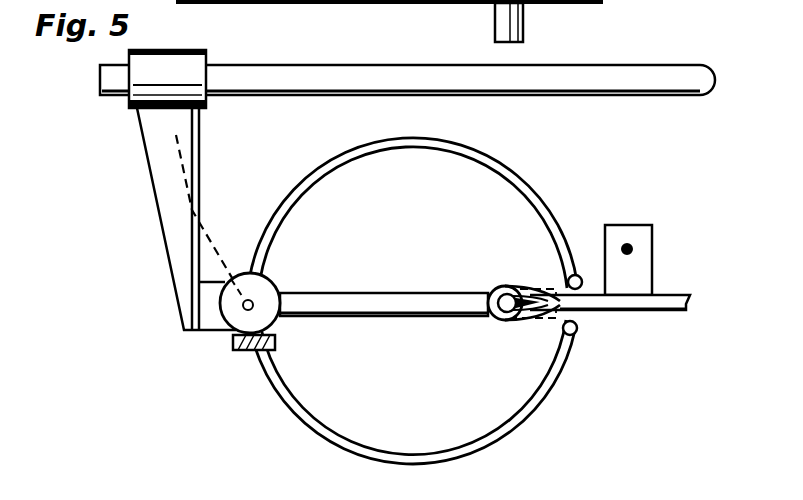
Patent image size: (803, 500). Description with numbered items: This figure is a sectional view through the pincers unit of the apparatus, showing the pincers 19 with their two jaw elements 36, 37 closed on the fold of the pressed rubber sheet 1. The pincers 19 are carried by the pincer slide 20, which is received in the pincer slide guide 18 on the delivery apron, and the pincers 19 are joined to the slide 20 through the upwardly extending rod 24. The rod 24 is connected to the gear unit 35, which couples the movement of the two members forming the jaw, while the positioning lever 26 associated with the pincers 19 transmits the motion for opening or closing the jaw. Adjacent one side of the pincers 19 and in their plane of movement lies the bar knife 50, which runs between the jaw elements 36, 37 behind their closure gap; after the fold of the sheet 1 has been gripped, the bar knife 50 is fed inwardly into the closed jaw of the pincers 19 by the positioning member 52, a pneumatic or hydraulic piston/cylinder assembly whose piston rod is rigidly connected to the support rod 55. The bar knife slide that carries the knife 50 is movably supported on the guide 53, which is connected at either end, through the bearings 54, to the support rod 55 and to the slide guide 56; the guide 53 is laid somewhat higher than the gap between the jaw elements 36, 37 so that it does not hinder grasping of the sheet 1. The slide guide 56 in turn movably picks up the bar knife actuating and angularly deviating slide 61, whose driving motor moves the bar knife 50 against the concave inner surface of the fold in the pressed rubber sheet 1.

The pressed rubber sheet 1 is at (686, 303).
The pincer slide guide 18 is at (275, 78).
The pincers 19 is at (542, 180).
The pincer slide 20 is at (138, 86).
The rod 24 is at (205, 144).
The positioning lever 26 is at (208, 226).
The gear unit 35 is at (240, 322).
The jaw element 36 is at (508, 432).
The jaw element 37 is at (428, 142).
The bar knife 50 is at (522, 320).
The positioning member 52 is at (510, 23).
The guide 53 is at (633, 251).
The bearings 54 is at (645, 281).
The support rod 55 is at (276, 346).
The slide guide 56 is at (320, 293).
The bar knife deviating slide 61 is at (527, 277).